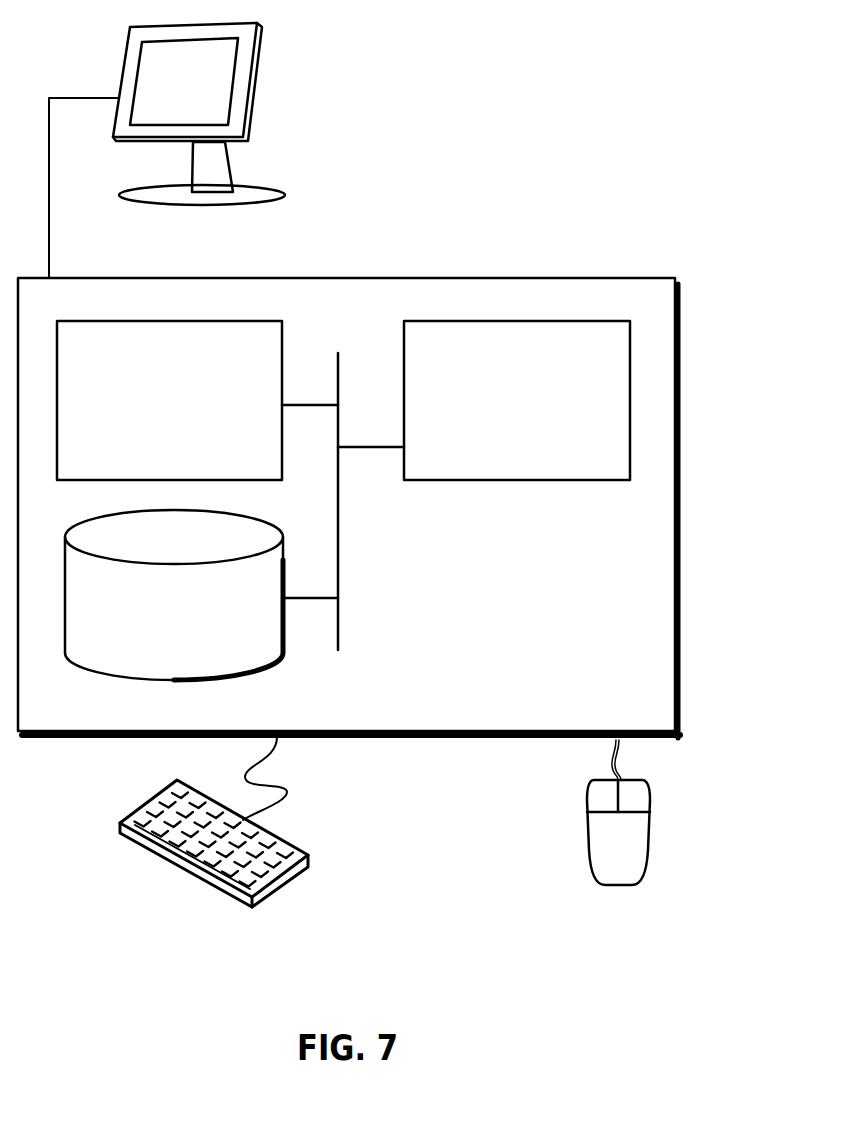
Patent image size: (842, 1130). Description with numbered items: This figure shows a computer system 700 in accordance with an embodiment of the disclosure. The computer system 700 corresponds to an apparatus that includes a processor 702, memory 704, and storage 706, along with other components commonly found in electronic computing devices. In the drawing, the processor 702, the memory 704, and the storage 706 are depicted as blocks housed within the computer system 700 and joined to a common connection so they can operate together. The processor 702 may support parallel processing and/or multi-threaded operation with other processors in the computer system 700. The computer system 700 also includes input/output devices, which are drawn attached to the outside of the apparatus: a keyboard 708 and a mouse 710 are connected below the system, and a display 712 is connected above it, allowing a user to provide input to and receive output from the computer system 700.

The computer system 700 is at (393, 257).
The processor 702 is at (541, 413).
The memory 704 is at (191, 413).
The storage 706 is at (198, 625).
The keyboard 708 is at (141, 845).
The mouse 710 is at (640, 856).
The display 712 is at (167, 150).